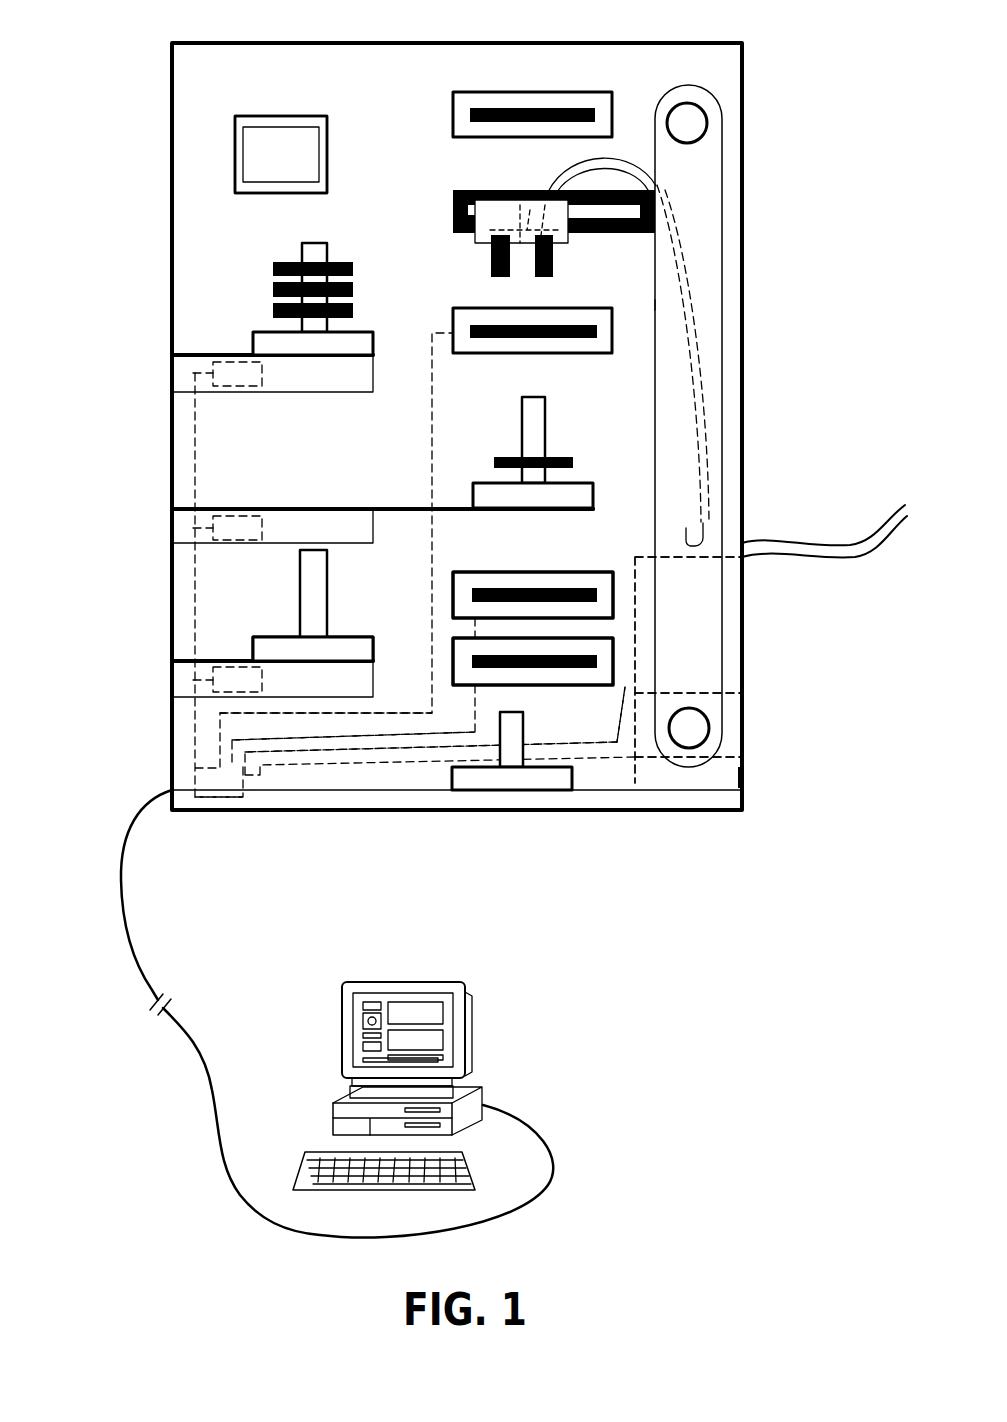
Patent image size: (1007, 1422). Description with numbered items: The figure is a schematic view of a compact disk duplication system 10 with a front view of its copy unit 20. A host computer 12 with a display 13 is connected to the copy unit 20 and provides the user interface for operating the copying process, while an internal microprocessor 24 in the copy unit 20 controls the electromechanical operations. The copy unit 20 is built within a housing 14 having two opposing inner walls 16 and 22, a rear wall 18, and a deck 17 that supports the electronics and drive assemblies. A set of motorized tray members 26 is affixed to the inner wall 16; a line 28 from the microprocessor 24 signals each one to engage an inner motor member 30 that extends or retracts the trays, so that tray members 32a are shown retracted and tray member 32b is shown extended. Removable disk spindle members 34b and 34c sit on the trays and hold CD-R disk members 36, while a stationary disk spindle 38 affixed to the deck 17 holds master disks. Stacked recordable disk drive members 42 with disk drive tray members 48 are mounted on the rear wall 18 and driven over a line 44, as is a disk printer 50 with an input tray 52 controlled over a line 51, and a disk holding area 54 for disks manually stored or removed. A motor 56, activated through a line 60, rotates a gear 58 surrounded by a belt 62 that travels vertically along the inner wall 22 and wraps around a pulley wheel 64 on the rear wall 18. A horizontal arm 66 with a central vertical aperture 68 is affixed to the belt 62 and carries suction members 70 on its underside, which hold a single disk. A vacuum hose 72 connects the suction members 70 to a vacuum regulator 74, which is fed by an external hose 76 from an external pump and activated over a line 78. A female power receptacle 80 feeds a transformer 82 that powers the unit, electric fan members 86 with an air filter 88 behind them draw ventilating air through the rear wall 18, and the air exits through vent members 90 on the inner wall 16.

The compact disk duplication system 10 is at (98, 867).
The host computer 12 is at (485, 975).
The display 13 is at (445, 1038).
The housing 14 is at (742, 356).
The inner wall 16 is at (178, 118).
The deck 17 is at (712, 812).
The rear wall 18 is at (281, 133).
The copy unit 20 is at (784, 202).
The inner wall 22 is at (746, 58).
The microprocessor 24 is at (232, 797).
The motorized tray members 26 is at (185, 382).
The line 28 is at (193, 443).
The inner motor member 30 is at (213, 370).
The tray members 32a is at (270, 352).
The tray member 32b is at (450, 512).
The disk spindle member 34b is at (595, 497).
The disk spindle member 34c is at (340, 637).
The CD-R disk members 36 is at (172, 172).
The stationary disk spindle 38 is at (526, 747).
The recordable disk drive members 42 is at (613, 612).
The line 44 is at (338, 740).
The disk drive tray members 48 is at (613, 585).
The disk printer 50 is at (613, 347).
The line 51 is at (398, 713).
The input tray 52 is at (655, 305).
The disk holding area 54 is at (510, 92).
The motor 56 is at (733, 748).
The gear 58 is at (668, 743).
The line 60 is at (280, 767).
The belt 62 is at (722, 172).
The pulley wheel 64 is at (708, 123).
The horizontal arm 66 is at (455, 212).
The vertical aperture 68 is at (498, 205).
The suction members 70 is at (491, 258).
The vacuum hose 72 is at (620, 160).
The vacuum regulator 74 is at (690, 540).
The external hose 76 is at (830, 557).
The line 78 is at (637, 560).
The female power receptacle 80 is at (748, 788).
The transformer 82 is at (652, 770).
The electric fan members 86 is at (322, 137).
The air filter 88 is at (270, 116).
The vent members 90 is at (172, 70).